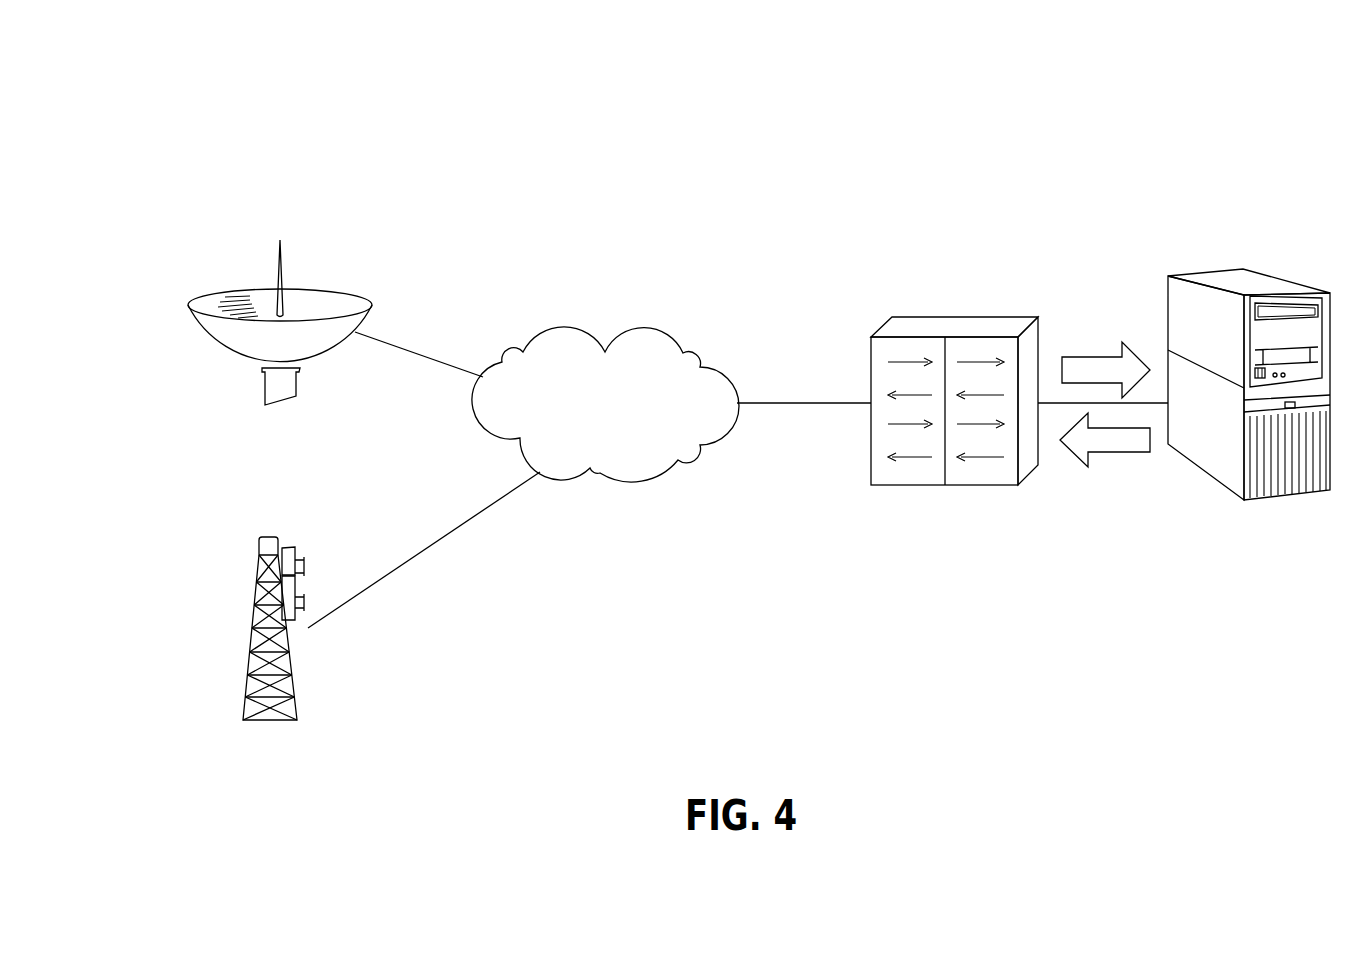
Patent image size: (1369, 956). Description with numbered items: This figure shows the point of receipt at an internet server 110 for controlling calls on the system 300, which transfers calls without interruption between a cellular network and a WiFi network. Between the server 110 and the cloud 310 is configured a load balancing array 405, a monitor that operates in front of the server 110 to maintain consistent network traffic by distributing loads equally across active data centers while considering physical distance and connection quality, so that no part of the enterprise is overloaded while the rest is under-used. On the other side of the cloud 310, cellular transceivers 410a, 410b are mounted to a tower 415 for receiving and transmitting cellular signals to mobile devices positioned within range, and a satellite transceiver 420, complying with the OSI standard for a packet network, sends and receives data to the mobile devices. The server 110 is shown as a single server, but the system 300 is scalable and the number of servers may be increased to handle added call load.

The system 300 is at (1097, 130).
The satellite transceiver 420 is at (198, 333).
The cloud 310 is at (663, 323).
The load balancing array 405 is at (1012, 317).
The internet server 110 is at (1294, 281).
The tower 415 is at (247, 692).
The cellular transceiver 410a is at (282, 582).
The cellular transceiver 410b is at (282, 620).